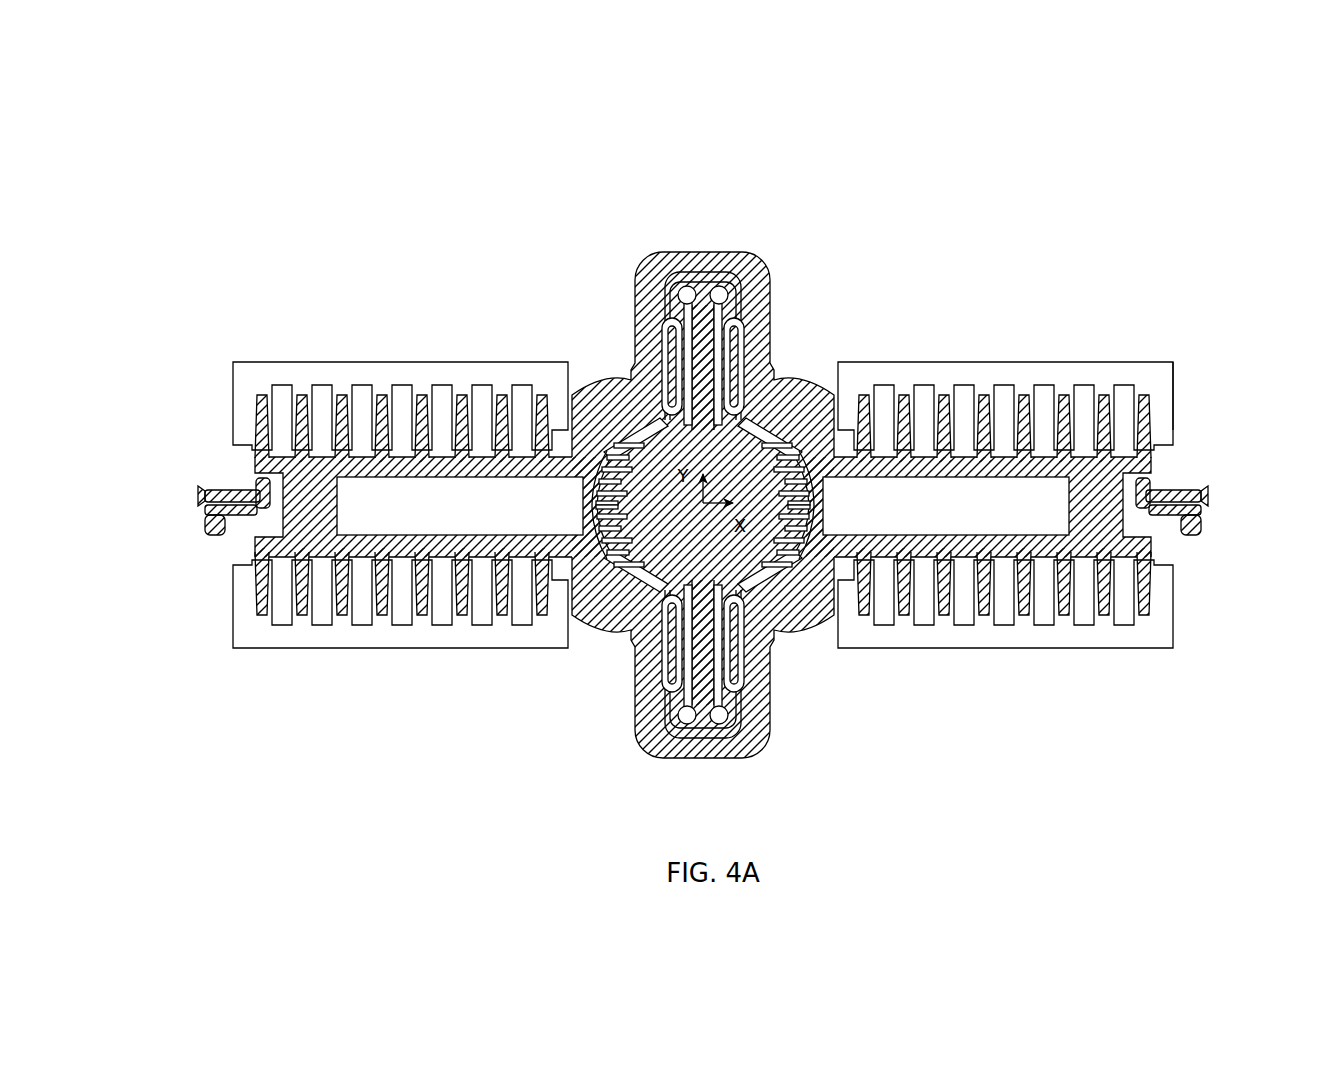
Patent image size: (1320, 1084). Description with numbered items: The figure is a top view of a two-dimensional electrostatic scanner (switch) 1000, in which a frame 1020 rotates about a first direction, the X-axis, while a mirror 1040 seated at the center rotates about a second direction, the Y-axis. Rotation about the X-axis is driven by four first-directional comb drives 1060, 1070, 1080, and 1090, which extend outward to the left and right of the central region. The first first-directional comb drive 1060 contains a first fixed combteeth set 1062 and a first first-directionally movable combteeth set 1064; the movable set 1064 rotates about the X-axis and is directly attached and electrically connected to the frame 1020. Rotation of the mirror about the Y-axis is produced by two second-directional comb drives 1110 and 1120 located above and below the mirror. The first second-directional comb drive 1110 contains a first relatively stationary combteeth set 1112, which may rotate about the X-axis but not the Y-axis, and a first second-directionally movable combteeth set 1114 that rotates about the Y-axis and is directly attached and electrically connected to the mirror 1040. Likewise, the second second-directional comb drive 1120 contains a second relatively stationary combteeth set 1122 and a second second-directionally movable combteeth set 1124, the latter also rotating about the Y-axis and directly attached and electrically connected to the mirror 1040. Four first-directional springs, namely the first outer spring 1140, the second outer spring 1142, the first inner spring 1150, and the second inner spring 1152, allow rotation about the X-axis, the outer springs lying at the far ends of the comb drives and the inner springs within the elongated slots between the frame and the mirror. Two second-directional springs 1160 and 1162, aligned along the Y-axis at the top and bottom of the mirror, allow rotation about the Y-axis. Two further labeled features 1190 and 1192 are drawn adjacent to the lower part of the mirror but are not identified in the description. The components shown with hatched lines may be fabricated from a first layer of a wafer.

The two-dimensional electrostatic scanner 1000 is at (1046, 182).
The frame 1020 is at (758, 294).
The mirror 1040 is at (727, 455).
The first first-directional comb drive 1060 is at (1215, 421).
The first fixed combteeth set 1062 is at (1188, 394).
The first first-directionally movable combteeth set 1064 is at (1163, 453).
The first-directional comb drive 1070 is at (209, 415).
The first-directional comb drive 1080 is at (209, 582).
The first-directional comb drive 1090 is at (1213, 588).
The first second-directional comb drive 1110 is at (770, 647).
The first relatively stationary combteeth set 1112 is at (752, 594).
The first second-directionally movable combteeth set 1114 is at (783, 443).
The second second-directional comb drive 1120 is at (640, 646).
The second relatively stationary combteeth set 1122 is at (655, 594).
The second second-directionally movable combteeth set 1124 is at (627, 443).
The first outer spring 1140 is at (1198, 523).
The second outer spring 1142 is at (205, 522).
The first inner spring 1150 is at (926, 505).
The second inner spring 1152 is at (482, 505).
The second-directional spring 1160 is at (705, 303).
The second-directional spring 1162 is at (707, 703).
The right electrode 1190 is at (765, 578).
The left electrode 1192 is at (640, 578).